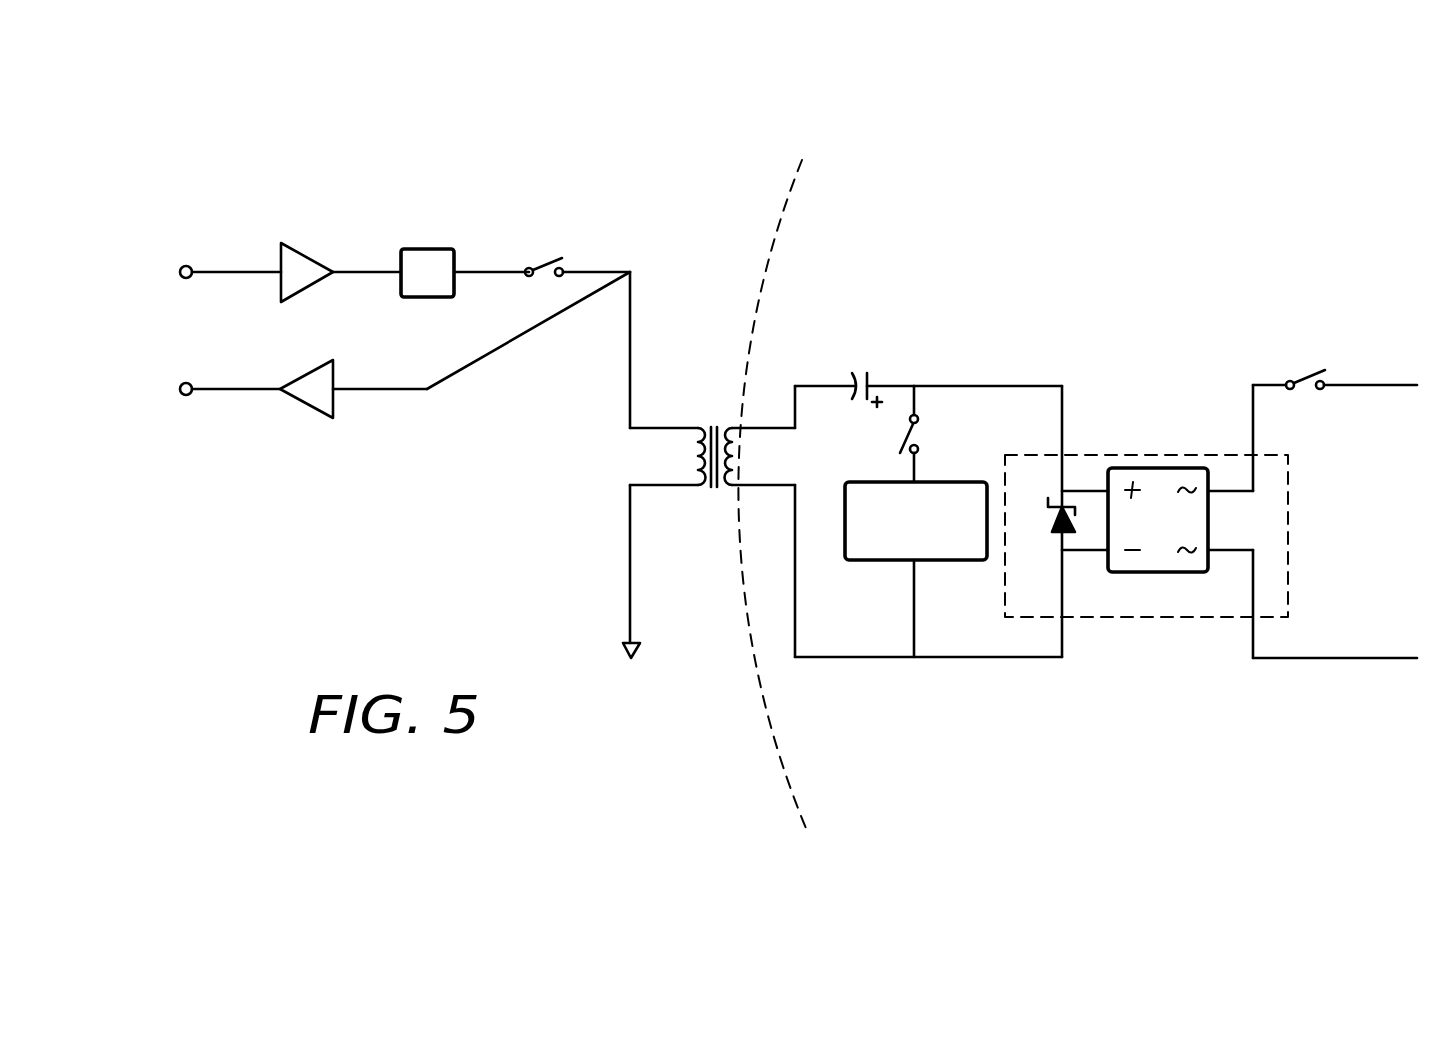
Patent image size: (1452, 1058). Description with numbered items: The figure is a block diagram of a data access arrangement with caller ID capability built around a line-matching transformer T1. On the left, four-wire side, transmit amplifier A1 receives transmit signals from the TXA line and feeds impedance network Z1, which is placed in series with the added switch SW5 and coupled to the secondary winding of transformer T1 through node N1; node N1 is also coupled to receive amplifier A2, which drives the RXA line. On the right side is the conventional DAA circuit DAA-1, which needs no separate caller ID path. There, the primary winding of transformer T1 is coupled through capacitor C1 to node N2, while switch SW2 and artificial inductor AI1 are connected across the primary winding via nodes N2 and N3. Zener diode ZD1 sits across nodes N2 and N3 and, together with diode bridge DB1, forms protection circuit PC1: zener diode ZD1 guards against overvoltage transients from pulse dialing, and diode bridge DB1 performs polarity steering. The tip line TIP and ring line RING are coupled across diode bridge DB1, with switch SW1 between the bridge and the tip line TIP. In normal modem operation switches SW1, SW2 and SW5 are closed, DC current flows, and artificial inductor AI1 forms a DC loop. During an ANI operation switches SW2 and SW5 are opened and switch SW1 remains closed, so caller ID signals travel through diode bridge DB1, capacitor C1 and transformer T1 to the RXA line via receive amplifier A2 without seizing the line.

The TXA line TXA is at (221, 255).
The RXA line RXA is at (221, 372).
The transmit amplifier A1 is at (312, 258).
The receive amplifier A2 is at (306, 407).
The impedance network Z1 is at (465, 273).
The switch SW5 is at (577, 252).
The node N1 is at (630, 300).
The transformer T1 is at (709, 542).
The capacitor C1 is at (854, 373).
The switch SW2 is at (931, 434).
The node N2 is at (1030, 387).
The node N3 is at (857, 657).
The artificial inductor AI1 is at (883, 560).
The zener diode ZD1 is at (1047, 528).
The diode bridge DB1 is at (1163, 467).
The protection circuit PC1 is at (1288, 557).
The switch SW1 is at (1293, 363).
The tip line TIP is at (1375, 403).
The ring line RING is at (1350, 675).
The DAA circuit DAA-1 is at (877, 276).